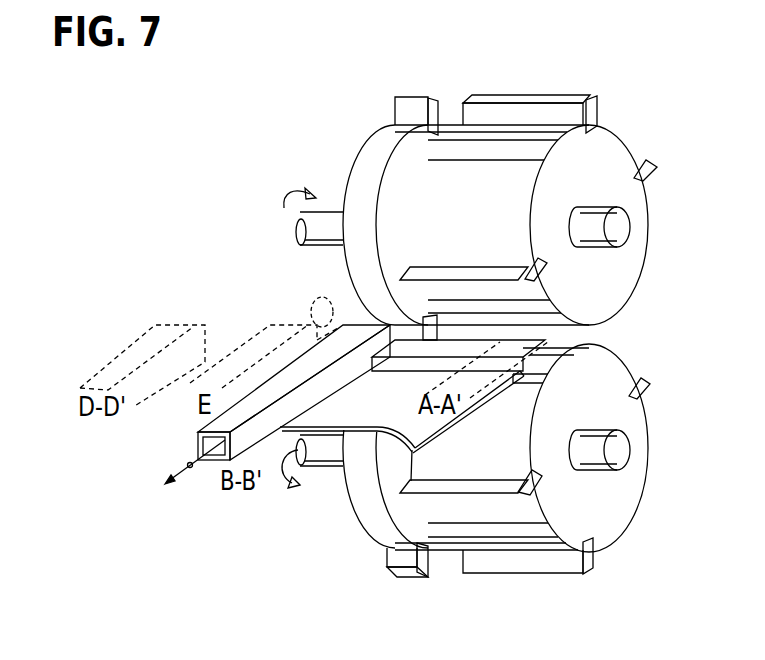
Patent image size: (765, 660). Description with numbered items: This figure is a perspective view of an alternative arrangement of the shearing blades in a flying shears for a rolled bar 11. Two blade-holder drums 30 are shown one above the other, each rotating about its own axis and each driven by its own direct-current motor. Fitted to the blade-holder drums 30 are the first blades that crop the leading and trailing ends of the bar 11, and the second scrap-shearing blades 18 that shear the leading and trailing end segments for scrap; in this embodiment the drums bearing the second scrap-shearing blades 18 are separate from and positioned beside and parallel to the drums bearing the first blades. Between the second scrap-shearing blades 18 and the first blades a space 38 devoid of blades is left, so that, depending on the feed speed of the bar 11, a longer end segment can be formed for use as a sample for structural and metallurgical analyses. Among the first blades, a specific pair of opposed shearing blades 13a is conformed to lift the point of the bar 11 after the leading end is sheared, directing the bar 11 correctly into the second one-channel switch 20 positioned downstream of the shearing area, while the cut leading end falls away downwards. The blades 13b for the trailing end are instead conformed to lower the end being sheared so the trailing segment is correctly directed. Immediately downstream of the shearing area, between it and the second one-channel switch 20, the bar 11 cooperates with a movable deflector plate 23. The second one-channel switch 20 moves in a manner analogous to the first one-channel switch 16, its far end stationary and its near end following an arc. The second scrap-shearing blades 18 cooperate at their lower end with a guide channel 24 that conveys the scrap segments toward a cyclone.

The blade-holder drums 30 is at (365, 185).
The pair of opposed shearing blades 13a is at (410, 115).
The second scrap-shearing blades 18 is at (582, 99).
The space devoid of blades 38 is at (452, 92).
The blades to shear the trailing end 13b is at (392, 327).
The movable deflector plate 23 is at (463, 350).
The first one-channel switch 16 is at (352, 290).
The guide channel 24 is at (400, 410).
The second one-channel switch 20 is at (200, 432).
The bar 11 is at (203, 463).